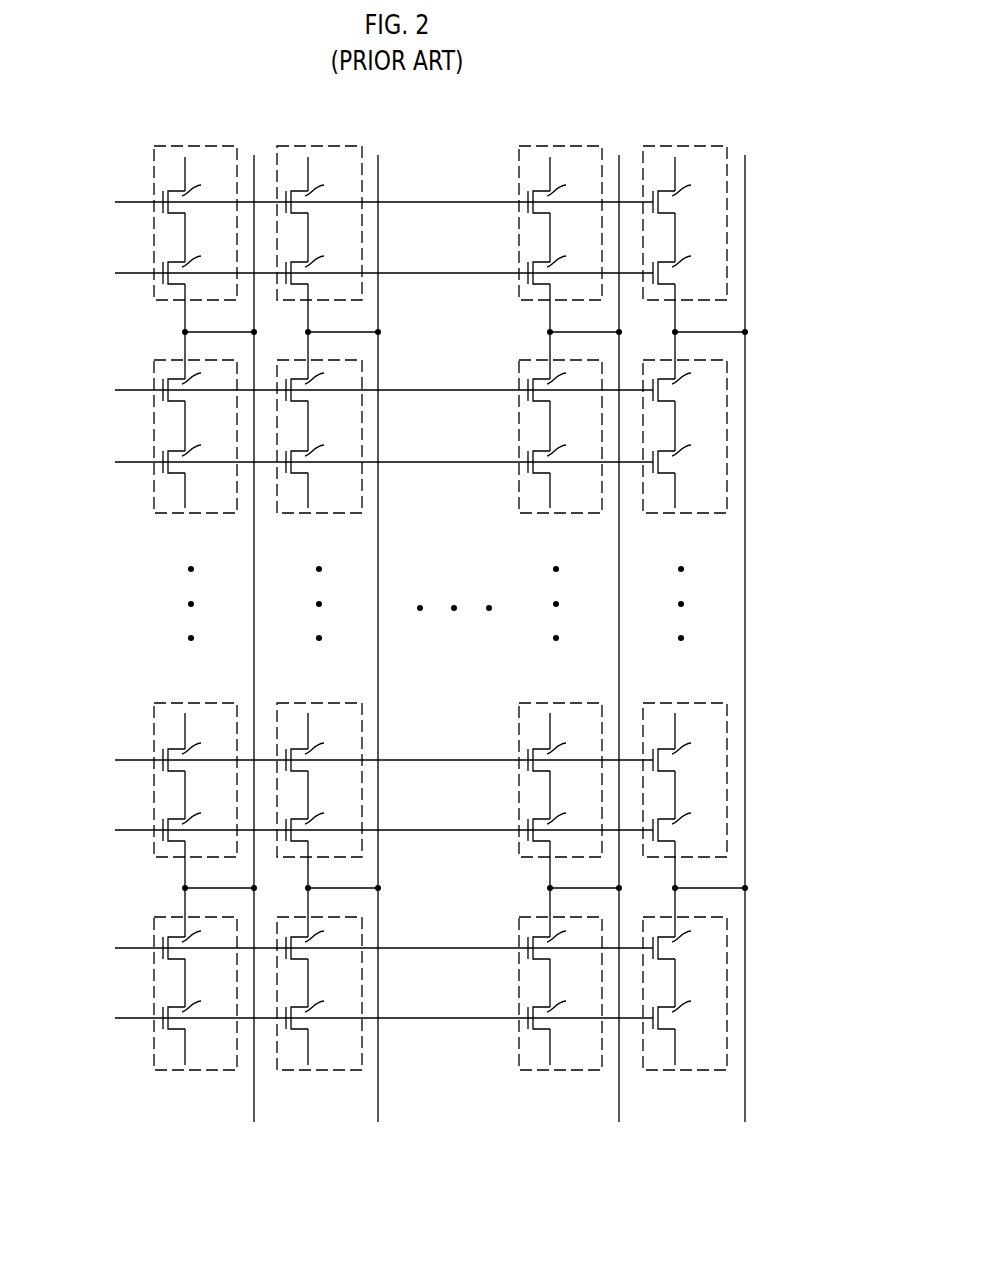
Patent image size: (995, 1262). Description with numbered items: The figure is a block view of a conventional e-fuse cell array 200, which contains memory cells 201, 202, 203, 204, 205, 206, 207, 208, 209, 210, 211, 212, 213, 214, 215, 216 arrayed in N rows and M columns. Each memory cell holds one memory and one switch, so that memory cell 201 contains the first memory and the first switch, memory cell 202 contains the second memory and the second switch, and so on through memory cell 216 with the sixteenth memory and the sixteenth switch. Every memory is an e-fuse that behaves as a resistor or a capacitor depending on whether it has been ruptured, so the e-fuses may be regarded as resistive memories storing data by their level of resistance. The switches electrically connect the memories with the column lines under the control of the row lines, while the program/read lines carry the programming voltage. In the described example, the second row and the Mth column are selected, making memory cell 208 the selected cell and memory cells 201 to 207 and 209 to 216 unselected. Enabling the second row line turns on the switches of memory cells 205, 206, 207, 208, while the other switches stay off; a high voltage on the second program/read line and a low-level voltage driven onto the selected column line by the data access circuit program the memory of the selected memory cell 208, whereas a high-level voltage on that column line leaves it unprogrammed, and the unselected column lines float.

The e-fuse cell array 200 is at (741, 82).
The memory cell 201 is at (199, 145).
The memory cell 202 is at (322, 145).
The memory cell 203 is at (564, 145).
The memory cell 204 is at (689, 145).
The memory cell 205 is at (199, 359).
The memory cell 206 is at (322, 359).
The memory cell 207 is at (564, 359).
The selected memory cell 208 is at (689, 359).
The memory cell 209 is at (199, 702).
The memory cell 210 is at (322, 702).
The memory cell 211 is at (564, 702).
The memory cell 212 is at (689, 702).
The memory cell 213 is at (199, 916).
The memory cell 214 is at (322, 916).
The memory cell 215 is at (564, 916).
The memory cell 216 is at (689, 916).